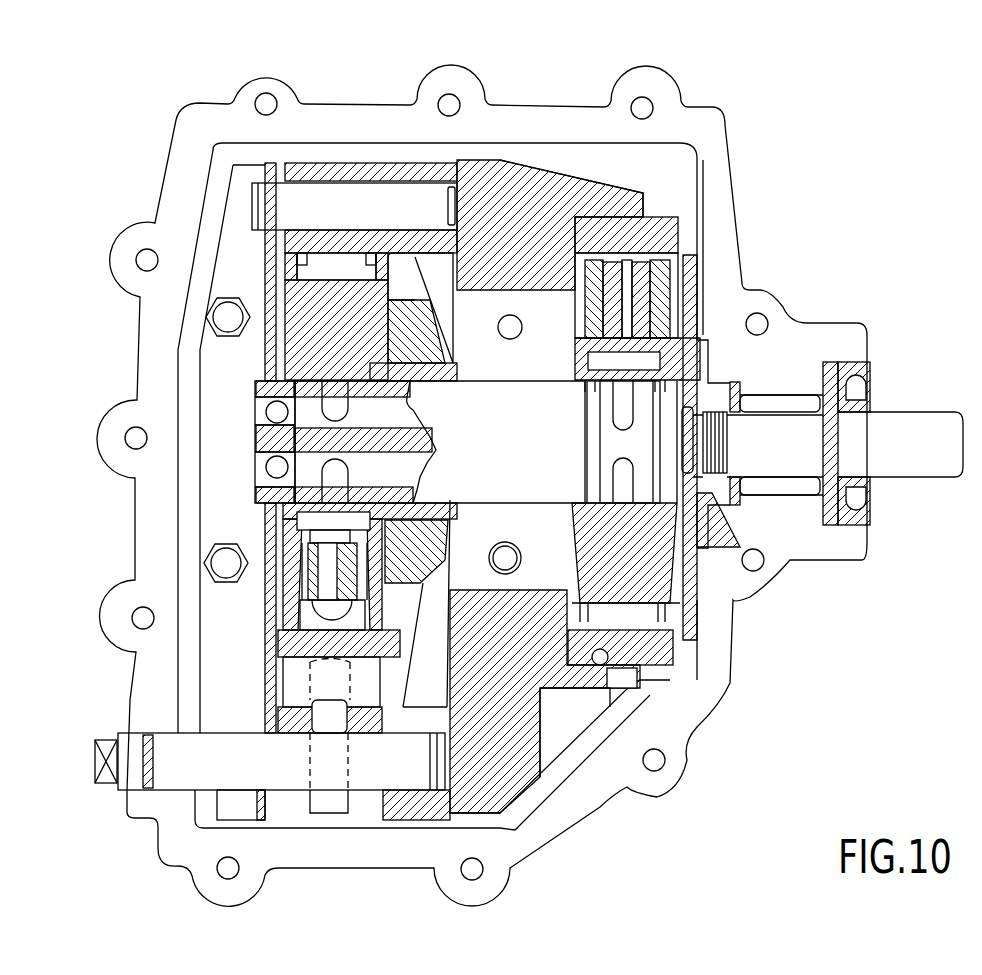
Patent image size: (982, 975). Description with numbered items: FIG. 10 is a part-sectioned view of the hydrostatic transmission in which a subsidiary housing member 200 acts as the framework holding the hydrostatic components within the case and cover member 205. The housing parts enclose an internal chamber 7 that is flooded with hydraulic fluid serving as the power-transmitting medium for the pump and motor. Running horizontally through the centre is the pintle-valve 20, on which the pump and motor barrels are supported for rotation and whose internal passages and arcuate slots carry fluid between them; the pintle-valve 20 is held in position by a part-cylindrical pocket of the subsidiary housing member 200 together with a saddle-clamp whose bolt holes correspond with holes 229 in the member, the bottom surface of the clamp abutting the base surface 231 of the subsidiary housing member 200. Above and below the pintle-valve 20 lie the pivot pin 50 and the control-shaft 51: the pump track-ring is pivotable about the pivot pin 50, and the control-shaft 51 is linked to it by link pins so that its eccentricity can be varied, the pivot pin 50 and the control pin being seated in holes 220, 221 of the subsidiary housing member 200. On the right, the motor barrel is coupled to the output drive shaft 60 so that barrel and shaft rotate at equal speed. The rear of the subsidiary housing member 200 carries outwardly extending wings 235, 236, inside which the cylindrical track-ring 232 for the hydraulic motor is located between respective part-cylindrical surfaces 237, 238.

The subsidiary housing member 200 is at (512, 220).
The cover member 205 is at (688, 698).
The internal chamber 7 is at (666, 184).
The hole 220 is at (392, 192).
The hole 221 is at (424, 775).
The pivot pin 50 is at (355, 220).
The control-shaft 51 is at (276, 772).
The pintle-valve 20 is at (513, 443).
The output drive shaft 60 is at (933, 450).
The hole 229 is at (505, 547).
The base surface 231 is at (548, 372).
The cylindrical track-ring 232 is at (668, 652).
The wing 235 is at (690, 680).
The wing 236 is at (672, 240).
The part-cylindrical surface 237 is at (600, 665).
The part-cylindrical surface 238 is at (613, 228).